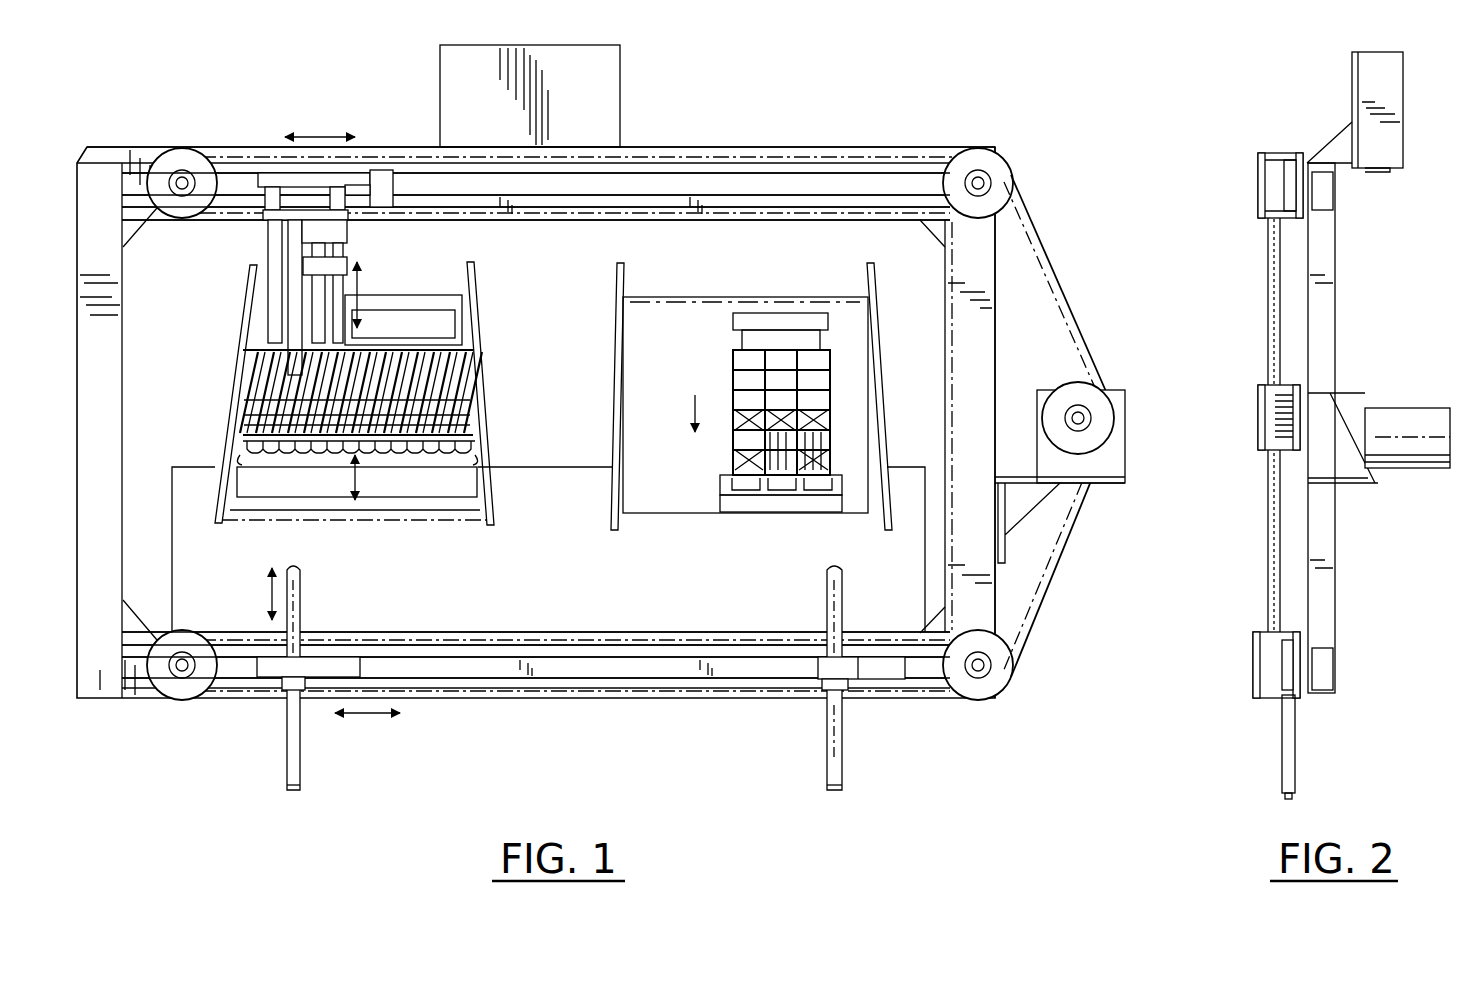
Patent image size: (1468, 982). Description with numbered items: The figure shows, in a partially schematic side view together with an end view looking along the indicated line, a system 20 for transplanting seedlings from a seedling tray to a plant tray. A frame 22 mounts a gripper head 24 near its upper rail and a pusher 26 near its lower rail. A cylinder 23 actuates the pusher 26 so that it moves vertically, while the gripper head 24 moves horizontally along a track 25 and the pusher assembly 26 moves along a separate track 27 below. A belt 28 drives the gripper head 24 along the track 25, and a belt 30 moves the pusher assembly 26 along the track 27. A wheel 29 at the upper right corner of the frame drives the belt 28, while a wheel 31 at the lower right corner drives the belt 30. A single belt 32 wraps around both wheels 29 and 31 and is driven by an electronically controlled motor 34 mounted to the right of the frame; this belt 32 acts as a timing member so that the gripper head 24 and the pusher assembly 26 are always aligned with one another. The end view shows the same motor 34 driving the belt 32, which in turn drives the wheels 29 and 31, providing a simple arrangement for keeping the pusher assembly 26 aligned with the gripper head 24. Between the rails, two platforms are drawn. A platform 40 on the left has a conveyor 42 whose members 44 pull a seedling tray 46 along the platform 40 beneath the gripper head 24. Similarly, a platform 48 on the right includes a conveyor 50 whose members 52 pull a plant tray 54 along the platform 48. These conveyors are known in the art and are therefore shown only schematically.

In FIG. 1, the system 20 is at (806, 56).
In FIG. 1, the frame 22 is at (984, 342).
In FIG. 1, the cylinder 23 is at (282, 720).
In FIG. 1, the gripper head 24 is at (332, 180).
In FIG. 1, the track 25 is at (605, 185).
In FIG. 1, the pusher 26 is at (340, 657).
In FIG. 1, the track 27 is at (465, 665).
In FIG. 1, the belt 28 is at (770, 218).
In FIG. 1, the wheel 29 is at (1000, 162).
In FIG. 2, the wheel 29 is at (1257, 170).
In FIG. 1, the belt 30 is at (645, 640).
In FIG. 1, the wheel 31 is at (1010, 690).
In FIG. 2, the wheel 31 is at (1252, 655).
In FIG. 1, the belt 32 is at (1065, 288).
In FIG. 2, the belt 32 is at (1268, 290).
In FIG. 1, the motor 34 is at (1115, 467).
In FIG. 2, the motor 34 is at (1400, 410).
In FIG. 1, the platform 40 is at (305, 510).
In FIG. 1, the conveyor 42 is at (405, 487).
In FIG. 1, the members 44 is at (240, 456).
In FIG. 1, the seedling tray 46 is at (440, 383).
In FIG. 1, the platform 48 is at (665, 495).
In FIG. 1, the conveyor 50 is at (790, 512).
In FIG. 1, the members 52 is at (738, 336).
In FIG. 1, the plant tray 54 is at (820, 378).